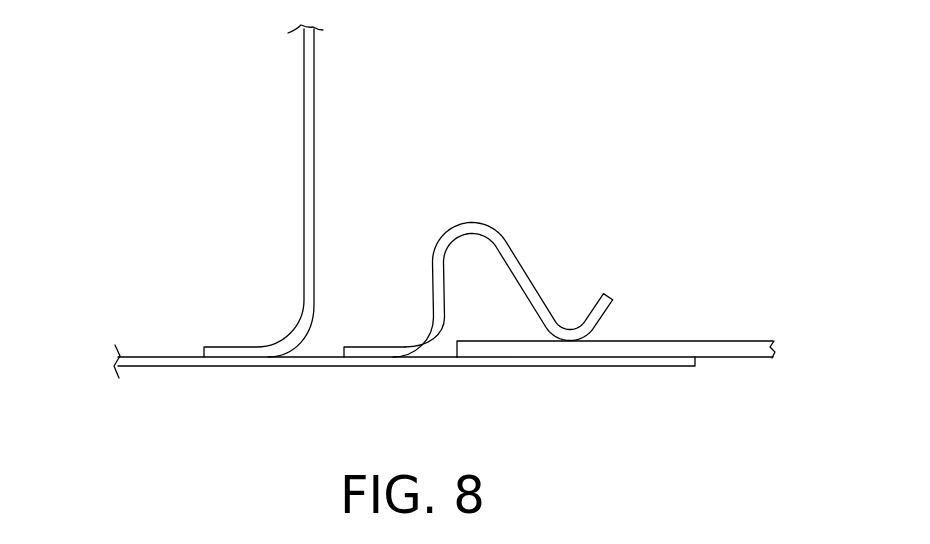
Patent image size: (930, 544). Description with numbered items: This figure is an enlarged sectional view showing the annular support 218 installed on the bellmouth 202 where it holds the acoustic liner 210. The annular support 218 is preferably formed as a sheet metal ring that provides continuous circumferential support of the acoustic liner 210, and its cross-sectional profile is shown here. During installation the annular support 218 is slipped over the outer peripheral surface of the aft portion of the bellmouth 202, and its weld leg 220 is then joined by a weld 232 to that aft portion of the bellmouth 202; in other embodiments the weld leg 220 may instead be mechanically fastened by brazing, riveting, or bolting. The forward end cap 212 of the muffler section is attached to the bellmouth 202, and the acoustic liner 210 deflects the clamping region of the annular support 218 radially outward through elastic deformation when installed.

The bellmouth 202 is at (153, 366).
The acoustic liner 210 is at (694, 341).
The forward end cap 212 is at (304, 124).
The annular support 218 is at (494, 172).
The weld leg 220 is at (377, 347).
The weld 232 is at (347, 366).